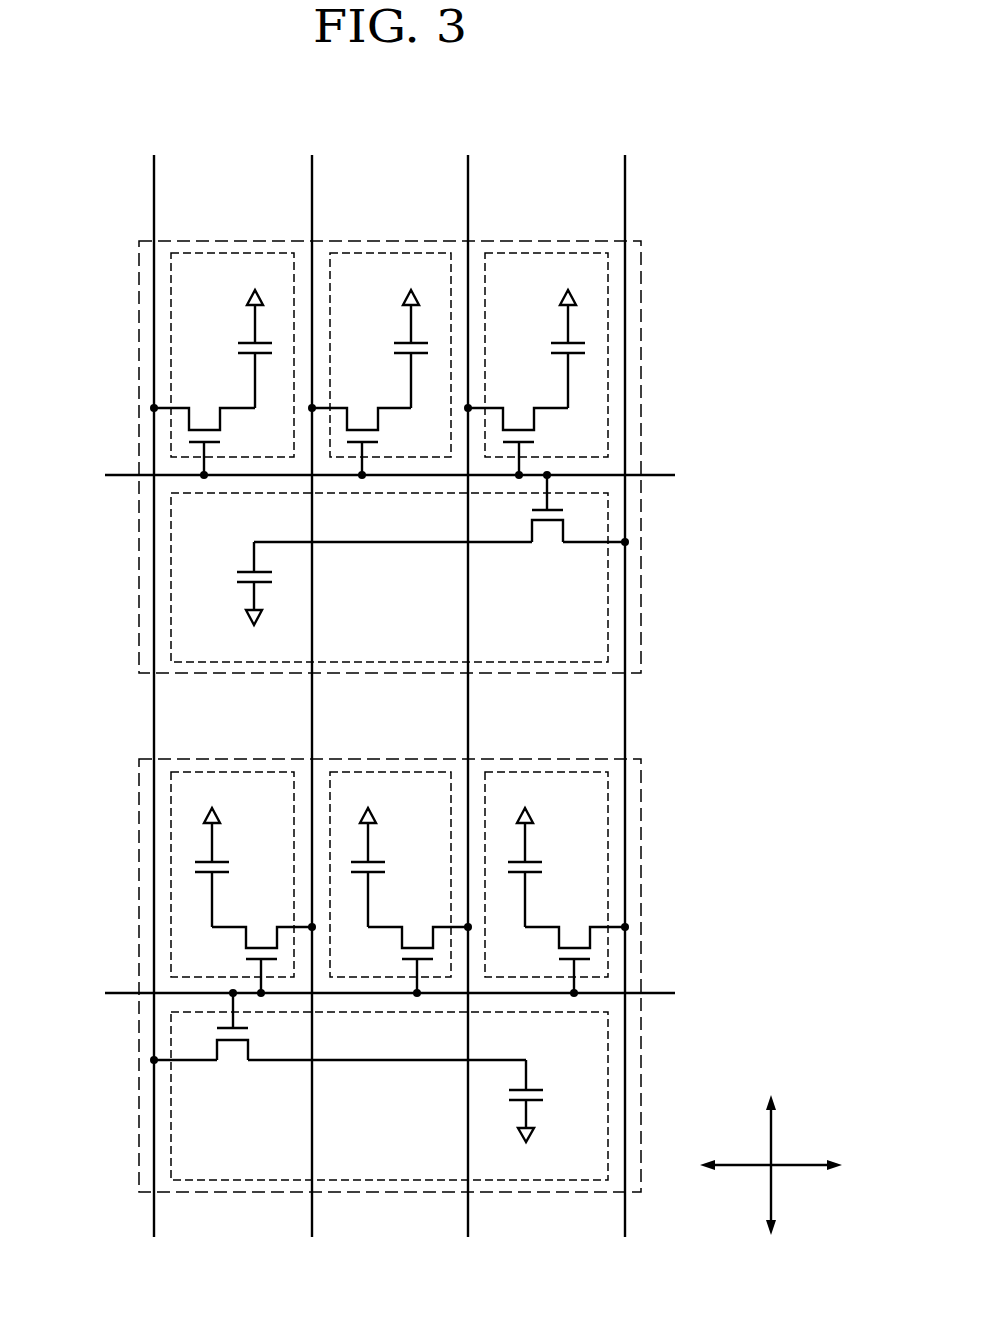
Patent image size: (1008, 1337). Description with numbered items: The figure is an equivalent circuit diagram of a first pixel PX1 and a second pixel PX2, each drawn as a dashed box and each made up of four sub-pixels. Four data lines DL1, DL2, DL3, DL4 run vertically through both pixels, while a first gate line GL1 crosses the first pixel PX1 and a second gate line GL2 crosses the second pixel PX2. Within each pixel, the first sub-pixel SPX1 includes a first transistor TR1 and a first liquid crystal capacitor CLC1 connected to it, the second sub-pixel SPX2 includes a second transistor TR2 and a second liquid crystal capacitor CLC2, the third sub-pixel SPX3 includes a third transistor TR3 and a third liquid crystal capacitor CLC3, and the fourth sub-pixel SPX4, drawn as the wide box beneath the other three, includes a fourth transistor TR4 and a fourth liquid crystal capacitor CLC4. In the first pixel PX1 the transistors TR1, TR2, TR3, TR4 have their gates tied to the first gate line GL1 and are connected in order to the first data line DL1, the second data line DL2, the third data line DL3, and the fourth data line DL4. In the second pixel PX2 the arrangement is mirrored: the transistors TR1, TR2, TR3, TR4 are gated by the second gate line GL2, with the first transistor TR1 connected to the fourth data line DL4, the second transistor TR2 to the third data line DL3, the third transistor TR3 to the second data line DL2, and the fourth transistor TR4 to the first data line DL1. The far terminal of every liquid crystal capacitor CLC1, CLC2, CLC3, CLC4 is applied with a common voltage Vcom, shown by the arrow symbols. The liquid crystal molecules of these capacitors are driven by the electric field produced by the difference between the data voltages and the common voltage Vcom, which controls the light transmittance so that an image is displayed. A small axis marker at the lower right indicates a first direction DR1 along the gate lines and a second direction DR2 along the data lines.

The first data line DL1 is at (154, 682).
The second data line DL2 is at (312, 682).
The third data line DL3 is at (468, 682).
The fourth data line DL4 is at (625, 682).
The first gate line GL1 is at (365, 476).
The second gate line GL2 is at (365, 994).
The first pixel PX1 is at (139, 356).
The second pixel PX2 is at (139, 878).
The first sub-pixel SPX1 is at (232, 253).
The second sub-pixel SPX2 is at (390, 253).
The third sub-pixel SPX3 is at (546, 253).
The fourth sub-pixel SPX4 is at (171, 530).
The first transistor TR1 is at (389, 689).
The second transistor TR2 is at (390, 689).
The third transistor TR3 is at (390, 689).
The fourth transistor TR4 is at (389, 781).
The first liquid crystal capacitor CLC1 is at (389, 616).
The second liquid crystal capacitor CLC2 is at (388, 616).
The third liquid crystal capacitor CLC3 is at (390, 616).
The fourth liquid crystal capacitor CLC4 is at (390, 835).
The common voltage Vcom is at (390, 718).
The first direction DR1 is at (791, 1166).
The second direction DR2 is at (771, 1152).